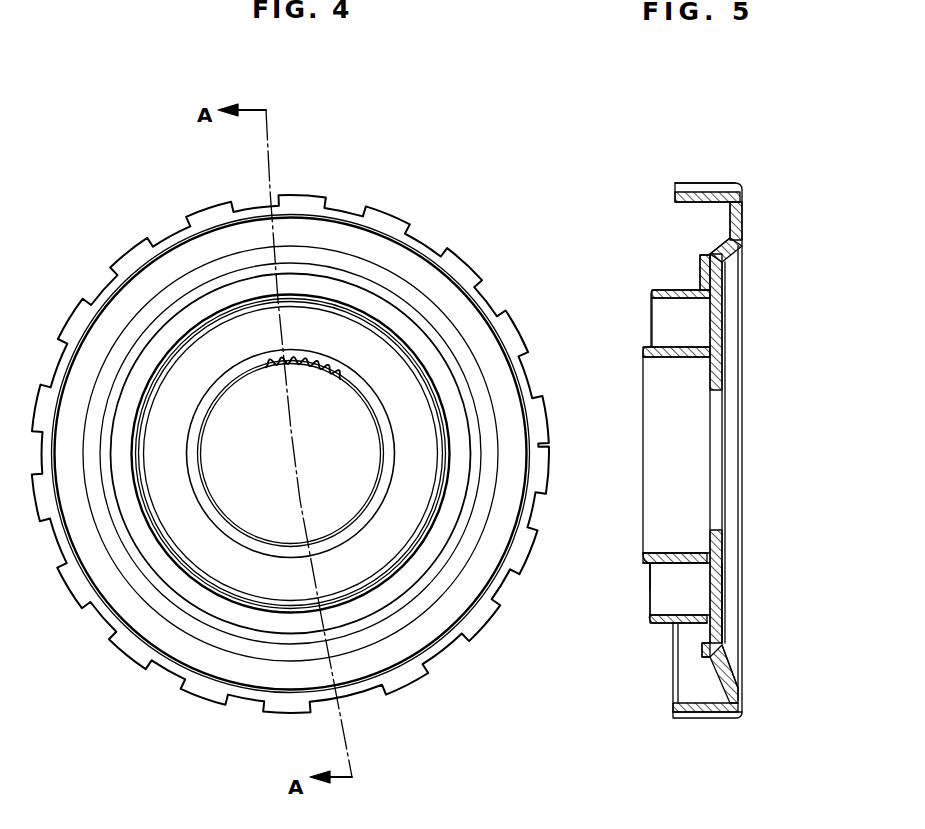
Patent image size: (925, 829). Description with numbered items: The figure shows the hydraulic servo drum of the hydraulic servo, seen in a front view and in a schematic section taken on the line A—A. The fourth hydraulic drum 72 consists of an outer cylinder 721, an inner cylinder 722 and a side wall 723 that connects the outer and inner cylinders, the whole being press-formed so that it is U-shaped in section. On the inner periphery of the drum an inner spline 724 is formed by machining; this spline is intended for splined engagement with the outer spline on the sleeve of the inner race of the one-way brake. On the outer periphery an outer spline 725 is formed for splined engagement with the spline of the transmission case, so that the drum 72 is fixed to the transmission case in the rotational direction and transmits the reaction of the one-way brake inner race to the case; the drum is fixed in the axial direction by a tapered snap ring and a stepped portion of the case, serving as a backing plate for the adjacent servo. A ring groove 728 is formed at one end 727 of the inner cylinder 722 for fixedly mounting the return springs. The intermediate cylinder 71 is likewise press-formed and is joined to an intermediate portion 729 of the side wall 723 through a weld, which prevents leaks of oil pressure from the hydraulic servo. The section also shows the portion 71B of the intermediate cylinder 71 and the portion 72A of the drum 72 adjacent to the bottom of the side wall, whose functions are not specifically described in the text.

In FIG. 4, the intermediate cylinder 71 is at (448, 390).
In FIG. 5, the intermediate cylinder 71 is at (652, 627).
In FIG. 4, the hub cylindrical portion 71B is at (415, 317).
In FIG. 5, the hub cylindrical portion 71B is at (708, 653).
In FIG. 4, the fourth hydraulic drum 72 is at (538, 498).
In FIG. 5, the fourth hydraulic drum 72 is at (743, 217).
In FIG. 5, the drum inner engaging portion 72A is at (712, 647).
In FIG. 4, the outer cylinder 721 is at (393, 693).
In FIG. 5, the outer cylinder 721 is at (705, 714).
In FIG. 4, the inner cylinder 722 is at (373, 400).
In FIG. 5, the inner cylinder 722 is at (673, 553).
In FIG. 4, the side wall 723 is at (515, 423).
In FIG. 5, the side wall 723 is at (717, 596).
In FIG. 4, the inner spline 724 is at (327, 375).
In FIG. 5, the inner spline 724 is at (698, 552).
In FIG. 5, the outer spline 725 is at (707, 185).
In FIG. 5, the one end of the inner cylinder 727 is at (643, 556).
In FIG. 5, the ring groove 728 is at (650, 572).
In FIG. 4, the intermediate portion of the side wall 729 is at (460, 323).
In FIG. 5, the intermediate portion of the side wall 729 is at (712, 663).